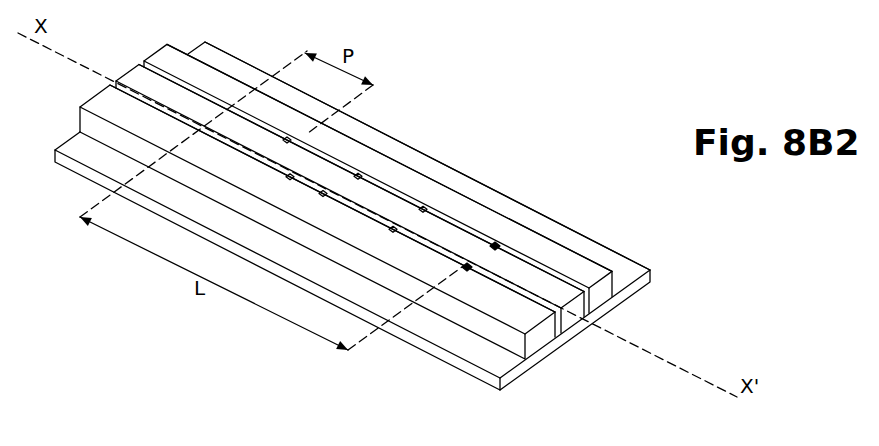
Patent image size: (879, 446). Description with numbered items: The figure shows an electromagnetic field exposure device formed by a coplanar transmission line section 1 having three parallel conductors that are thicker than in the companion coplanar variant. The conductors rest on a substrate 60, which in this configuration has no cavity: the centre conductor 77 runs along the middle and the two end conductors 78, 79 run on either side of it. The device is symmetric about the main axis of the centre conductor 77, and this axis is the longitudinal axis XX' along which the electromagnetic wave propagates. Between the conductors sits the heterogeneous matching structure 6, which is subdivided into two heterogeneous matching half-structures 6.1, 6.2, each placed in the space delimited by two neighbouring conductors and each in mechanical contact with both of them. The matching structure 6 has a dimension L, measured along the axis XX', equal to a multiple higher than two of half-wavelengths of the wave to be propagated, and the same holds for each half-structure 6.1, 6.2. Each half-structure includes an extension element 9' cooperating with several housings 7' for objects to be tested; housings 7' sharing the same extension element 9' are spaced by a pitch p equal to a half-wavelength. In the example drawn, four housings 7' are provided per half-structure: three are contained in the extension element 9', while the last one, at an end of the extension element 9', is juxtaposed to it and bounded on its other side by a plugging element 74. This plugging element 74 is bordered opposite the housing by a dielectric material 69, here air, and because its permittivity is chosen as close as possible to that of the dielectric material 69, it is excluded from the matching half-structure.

The coplanar transmission line section 1 is at (369, 113).
The substrate 60 is at (512, 380).
The centre conductor 77 is at (565, 322).
The end conductor 78 is at (535, 347).
The end conductor 79 is at (598, 292).
The plugging element 74 is at (558, 232).
The dielectric material 69 is at (600, 246).
The heterogeneous matching structure 6 is at (605, 137).
The heterogeneous matching half-structure 6.1 is at (378, 173).
The heterogeneous matching half-structure 6.2 is at (496, 243).
The extension element 9' is at (332, 198).
The housing 7' is at (491, 206).